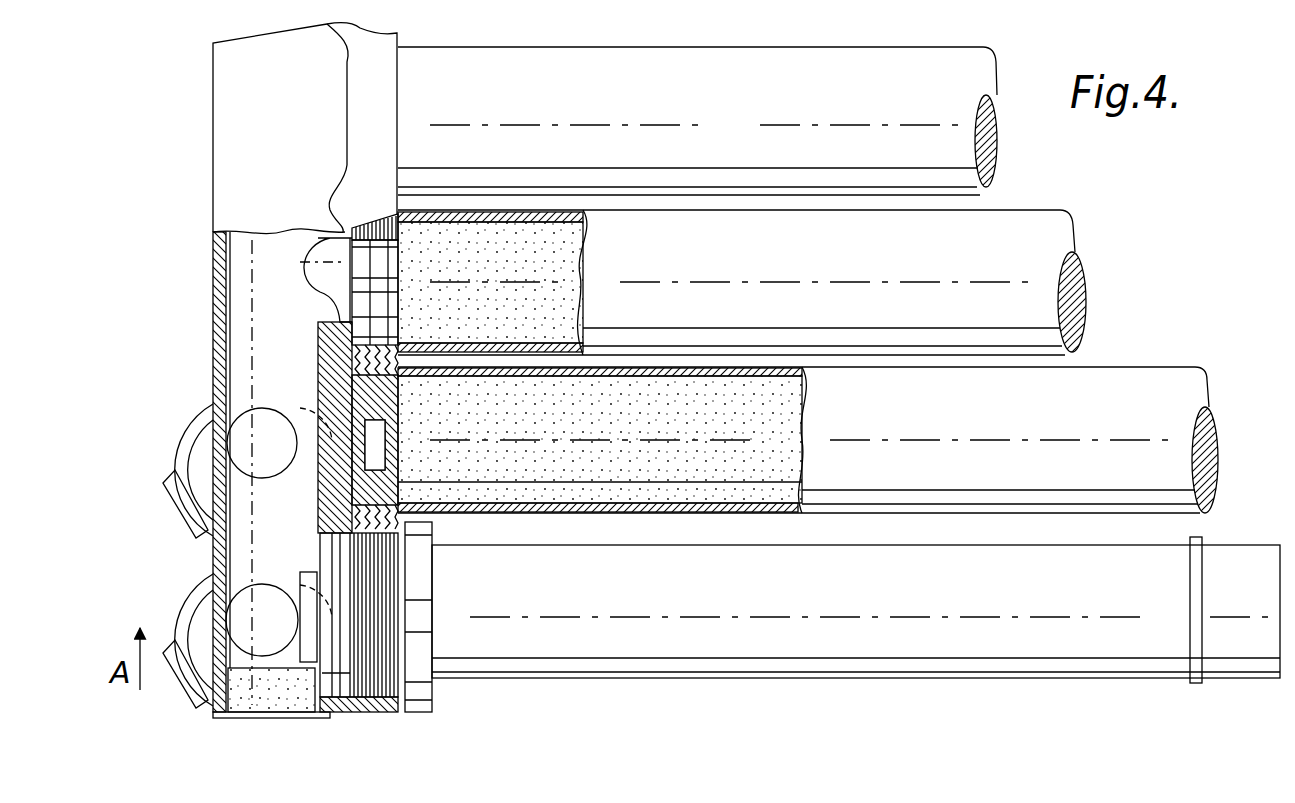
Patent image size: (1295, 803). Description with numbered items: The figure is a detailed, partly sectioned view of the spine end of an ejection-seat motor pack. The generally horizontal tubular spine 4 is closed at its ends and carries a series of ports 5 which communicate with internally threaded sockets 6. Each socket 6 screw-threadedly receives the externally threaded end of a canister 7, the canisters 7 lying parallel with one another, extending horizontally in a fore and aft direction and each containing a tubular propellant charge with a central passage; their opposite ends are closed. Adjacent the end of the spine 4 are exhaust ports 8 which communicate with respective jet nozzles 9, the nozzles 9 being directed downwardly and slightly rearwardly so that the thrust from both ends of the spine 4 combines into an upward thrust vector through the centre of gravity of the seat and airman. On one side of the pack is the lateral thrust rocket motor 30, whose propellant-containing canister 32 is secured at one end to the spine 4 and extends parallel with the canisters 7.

The tubular spine 4 is at (213, 202).
The ports 5 is at (343, 320).
The internally threaded sockets 6 is at (332, 322).
The canisters 7 is at (978, 75).
The exhaust ports 8 is at (250, 412).
The jet nozzles 9 is at (172, 480).
The lateral thrust rocket motor 30 is at (818, 686).
The propellant-containing canister 32 is at (652, 683).